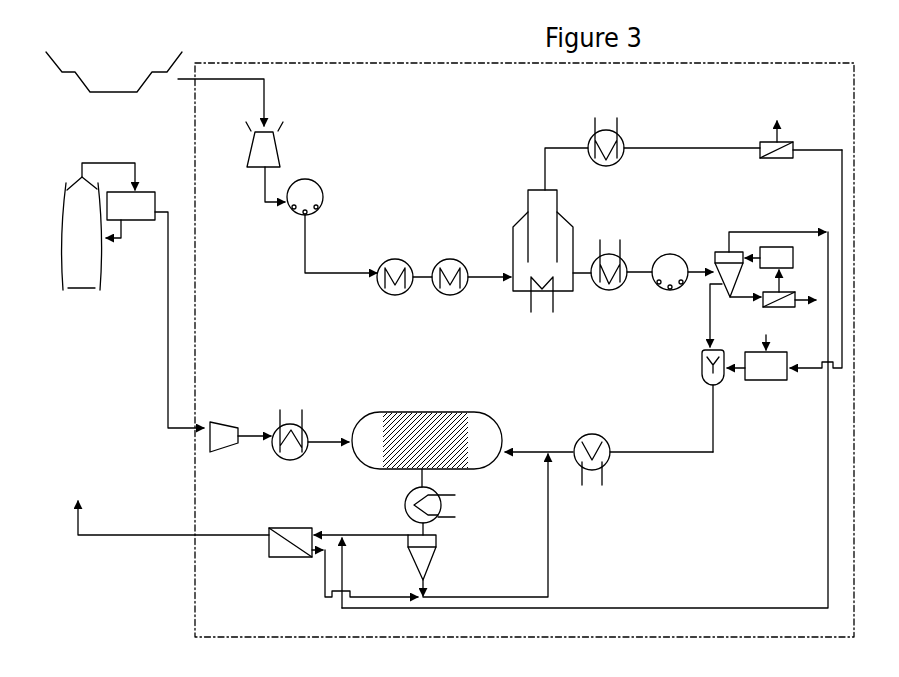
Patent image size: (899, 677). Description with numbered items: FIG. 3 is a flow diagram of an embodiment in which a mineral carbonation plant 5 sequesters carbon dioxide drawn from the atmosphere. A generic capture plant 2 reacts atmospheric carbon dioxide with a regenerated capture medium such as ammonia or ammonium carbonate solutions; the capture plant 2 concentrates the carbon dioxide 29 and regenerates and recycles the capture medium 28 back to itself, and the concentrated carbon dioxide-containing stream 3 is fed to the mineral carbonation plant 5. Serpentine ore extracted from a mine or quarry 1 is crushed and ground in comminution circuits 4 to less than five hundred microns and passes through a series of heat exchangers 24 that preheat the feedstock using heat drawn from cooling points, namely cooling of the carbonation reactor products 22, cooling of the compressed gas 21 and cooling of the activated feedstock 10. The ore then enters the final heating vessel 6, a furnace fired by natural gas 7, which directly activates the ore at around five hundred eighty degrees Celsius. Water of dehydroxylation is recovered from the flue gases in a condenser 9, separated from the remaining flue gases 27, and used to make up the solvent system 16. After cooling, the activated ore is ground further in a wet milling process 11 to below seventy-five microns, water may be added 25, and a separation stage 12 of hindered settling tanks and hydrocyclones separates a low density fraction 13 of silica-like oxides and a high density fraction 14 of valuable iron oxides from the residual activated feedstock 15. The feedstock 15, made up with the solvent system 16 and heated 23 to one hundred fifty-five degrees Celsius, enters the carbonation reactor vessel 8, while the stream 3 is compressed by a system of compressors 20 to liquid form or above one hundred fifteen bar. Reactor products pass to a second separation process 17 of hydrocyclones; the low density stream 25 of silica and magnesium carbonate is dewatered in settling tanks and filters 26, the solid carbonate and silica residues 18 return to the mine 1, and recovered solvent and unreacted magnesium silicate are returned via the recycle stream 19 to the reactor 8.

The mine or quarry 1 is at (115, 92).
The capture plant 2 is at (83, 292).
The carbon dioxide-containing stream 3 is at (158, 403).
The comminution circuits 4 is at (295, 130).
The mineral carbonation plant 5 is at (190, 122).
The final heating vessel 6 is at (520, 210).
The natural gas 7 is at (525, 312).
The carbonation reactor vessel 8 is at (430, 407).
The condenser 9 is at (583, 132).
The cooling of activated feedstock 10 is at (607, 232).
The wet milling process 11 is at (667, 245).
The separation stage 12 is at (712, 250).
The low density fraction 13 is at (813, 226).
The high density fraction 14 is at (806, 300).
The residual activated feedstock 15 is at (707, 310).
The solvent system 16 is at (735, 390).
The second separation process 17 is at (437, 567).
The carbonate and silica residues 18 is at (90, 537).
The recycle stream 19 is at (553, 542).
The system of compressors 20 is at (228, 420).
The heat recovery from compressors 21 is at (297, 405).
The cooling of carbonation reactor products 22 is at (455, 507).
The heating 23 is at (590, 432).
The heat exchangers 24 is at (395, 257).
The low density stream 25 is at (768, 245).
The settling tanks and filters 26 is at (290, 525).
The flue gases 27 is at (770, 132).
The capture medium 28 is at (110, 245).
The concentrated carbon dioxide 29 is at (138, 222).